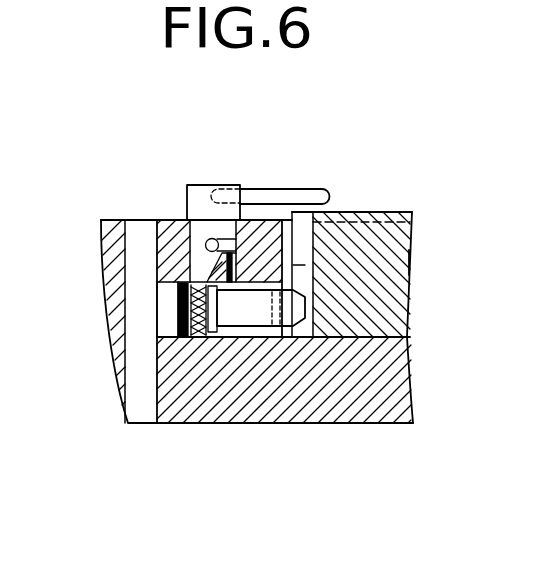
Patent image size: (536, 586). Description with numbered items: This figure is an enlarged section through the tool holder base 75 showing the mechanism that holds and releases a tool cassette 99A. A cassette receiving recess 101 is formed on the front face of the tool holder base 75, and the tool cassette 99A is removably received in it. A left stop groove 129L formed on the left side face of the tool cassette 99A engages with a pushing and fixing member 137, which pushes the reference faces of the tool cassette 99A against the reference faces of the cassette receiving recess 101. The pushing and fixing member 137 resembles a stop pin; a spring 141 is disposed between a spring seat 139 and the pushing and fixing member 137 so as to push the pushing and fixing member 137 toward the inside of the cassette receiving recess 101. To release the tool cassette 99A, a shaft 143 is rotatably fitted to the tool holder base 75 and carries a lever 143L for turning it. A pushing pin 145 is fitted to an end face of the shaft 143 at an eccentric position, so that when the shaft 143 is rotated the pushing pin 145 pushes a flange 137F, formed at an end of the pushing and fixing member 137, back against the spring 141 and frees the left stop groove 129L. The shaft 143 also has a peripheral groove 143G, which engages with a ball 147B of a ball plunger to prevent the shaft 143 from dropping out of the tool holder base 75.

The tool holder base 75 is at (343, 398).
The tool cassette 99A is at (408, 262).
The cassette receiving recess 101 is at (270, 222).
The left stop groove 129L is at (340, 212).
The pushing and fixing member 137 is at (250, 326).
The flange 137F is at (200, 337).
The spring seat 139 is at (157, 358).
The spring 141 is at (160, 337).
The shaft 143 is at (187, 197).
The peripheral groove 143G is at (209, 240).
The lever 143L is at (253, 188).
The pushing pin 145 is at (305, 266).
The ball 147B is at (206, 247).